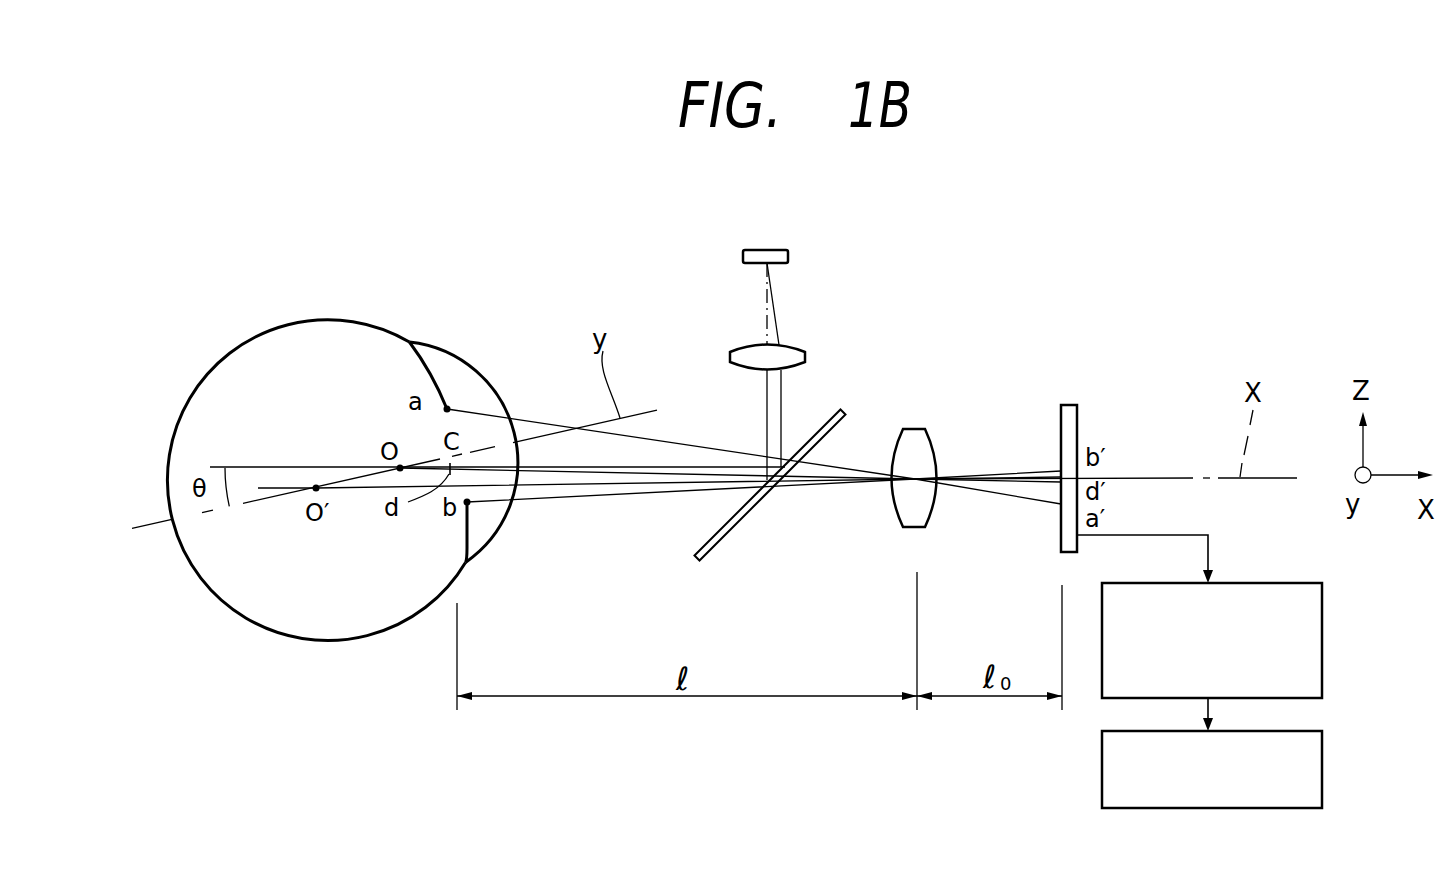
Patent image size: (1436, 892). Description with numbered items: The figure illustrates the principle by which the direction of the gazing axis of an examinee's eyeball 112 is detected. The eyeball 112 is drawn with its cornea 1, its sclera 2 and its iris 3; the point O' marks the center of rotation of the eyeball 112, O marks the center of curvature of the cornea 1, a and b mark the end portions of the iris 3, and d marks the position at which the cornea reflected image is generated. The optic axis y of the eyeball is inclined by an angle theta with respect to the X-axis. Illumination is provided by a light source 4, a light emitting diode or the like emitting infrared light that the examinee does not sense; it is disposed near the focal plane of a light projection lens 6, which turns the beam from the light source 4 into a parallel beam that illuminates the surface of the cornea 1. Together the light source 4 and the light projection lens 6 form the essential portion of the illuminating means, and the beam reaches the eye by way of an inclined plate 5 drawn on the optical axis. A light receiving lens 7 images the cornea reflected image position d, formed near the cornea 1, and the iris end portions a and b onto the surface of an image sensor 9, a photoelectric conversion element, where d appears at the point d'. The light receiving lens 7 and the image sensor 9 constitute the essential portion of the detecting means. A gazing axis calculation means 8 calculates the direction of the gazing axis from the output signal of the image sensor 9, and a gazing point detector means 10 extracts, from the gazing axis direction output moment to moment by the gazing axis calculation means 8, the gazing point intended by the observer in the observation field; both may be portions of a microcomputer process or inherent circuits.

The eyeball 112 is at (226, 324).
The cornea 1 is at (448, 350).
The sclera 2 is at (342, 318).
The iris 3 is at (433, 380).
The light source 4 is at (790, 256).
The beam splitter 5 is at (695, 562).
The light projection lens 6 is at (792, 348).
The light receiving lens 7 is at (914, 428).
The gazing axis calculation means 8 is at (1322, 608).
The image sensor 9 is at (1083, 405).
The gazing point detector means 10 is at (1322, 758).